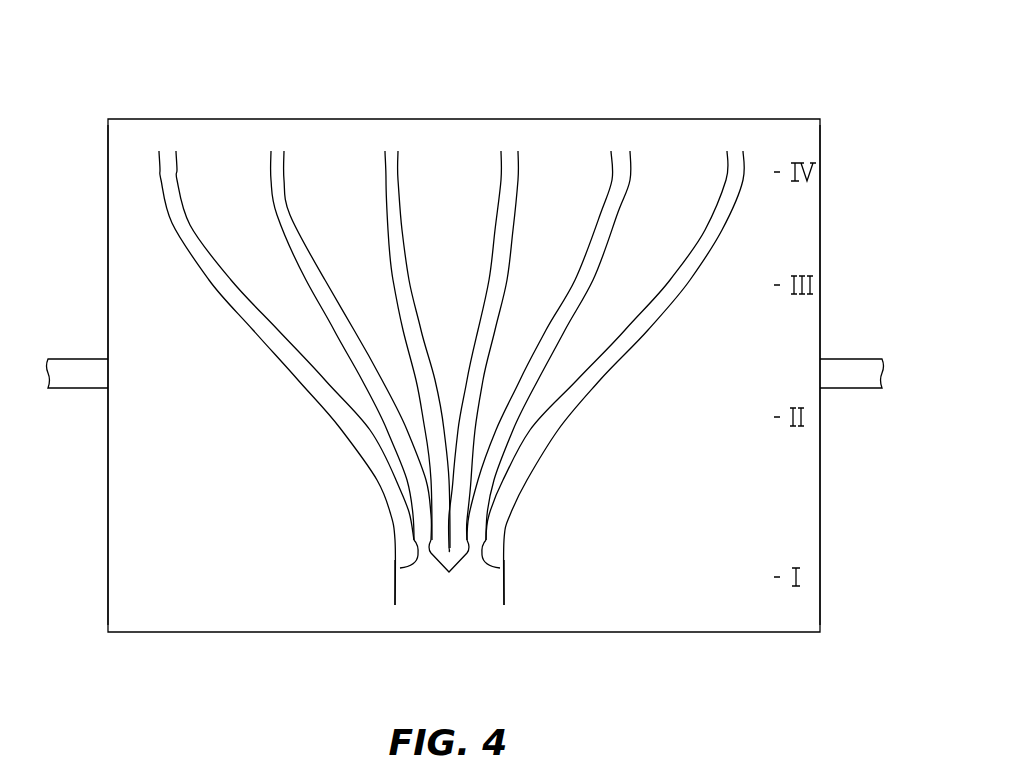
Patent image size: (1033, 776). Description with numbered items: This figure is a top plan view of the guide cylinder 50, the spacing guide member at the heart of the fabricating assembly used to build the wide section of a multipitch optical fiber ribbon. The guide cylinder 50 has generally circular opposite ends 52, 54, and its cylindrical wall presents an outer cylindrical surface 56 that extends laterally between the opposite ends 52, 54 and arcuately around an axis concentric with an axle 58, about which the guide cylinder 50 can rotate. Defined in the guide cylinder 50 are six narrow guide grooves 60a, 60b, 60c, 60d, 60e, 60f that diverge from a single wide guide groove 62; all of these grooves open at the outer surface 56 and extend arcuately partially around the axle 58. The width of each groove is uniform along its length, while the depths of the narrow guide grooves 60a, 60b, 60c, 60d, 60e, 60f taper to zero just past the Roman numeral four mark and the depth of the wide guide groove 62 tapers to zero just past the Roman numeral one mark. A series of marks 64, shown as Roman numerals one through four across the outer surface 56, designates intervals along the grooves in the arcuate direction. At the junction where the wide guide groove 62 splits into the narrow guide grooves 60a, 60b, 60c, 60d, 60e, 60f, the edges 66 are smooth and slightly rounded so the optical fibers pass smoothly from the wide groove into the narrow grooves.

The guide cylinder 50 is at (765, 68).
The opposite end 52 is at (108, 145).
The opposite end 54 is at (820, 153).
The outer cylindrical surface 56 is at (218, 467).
The axle 58 is at (62, 390).
The narrow guide groove 60a is at (206, 271).
The narrow guide groove 60b is at (281, 231).
The narrow guide groove 60c is at (383, 195).
The narrow guide groove 60d is at (500, 222).
The narrow guide groove 60e is at (618, 220).
The narrow guide groove 60f is at (505, 540).
The wide guide groove 62 is at (440, 616).
The series of marks 64 is at (773, 606).
The edges 66 is at (400, 568).